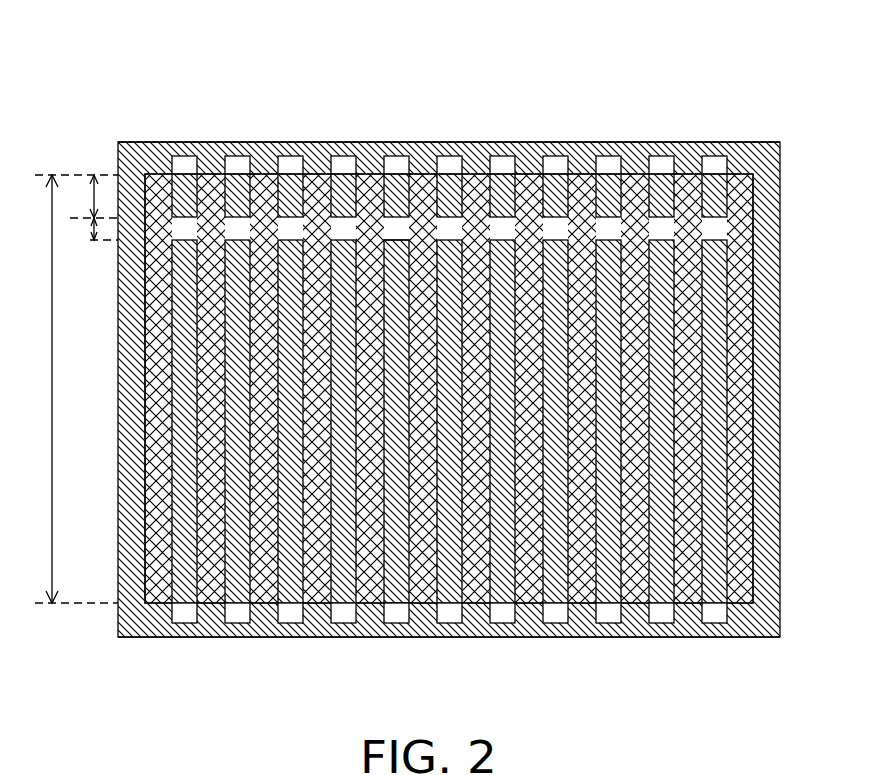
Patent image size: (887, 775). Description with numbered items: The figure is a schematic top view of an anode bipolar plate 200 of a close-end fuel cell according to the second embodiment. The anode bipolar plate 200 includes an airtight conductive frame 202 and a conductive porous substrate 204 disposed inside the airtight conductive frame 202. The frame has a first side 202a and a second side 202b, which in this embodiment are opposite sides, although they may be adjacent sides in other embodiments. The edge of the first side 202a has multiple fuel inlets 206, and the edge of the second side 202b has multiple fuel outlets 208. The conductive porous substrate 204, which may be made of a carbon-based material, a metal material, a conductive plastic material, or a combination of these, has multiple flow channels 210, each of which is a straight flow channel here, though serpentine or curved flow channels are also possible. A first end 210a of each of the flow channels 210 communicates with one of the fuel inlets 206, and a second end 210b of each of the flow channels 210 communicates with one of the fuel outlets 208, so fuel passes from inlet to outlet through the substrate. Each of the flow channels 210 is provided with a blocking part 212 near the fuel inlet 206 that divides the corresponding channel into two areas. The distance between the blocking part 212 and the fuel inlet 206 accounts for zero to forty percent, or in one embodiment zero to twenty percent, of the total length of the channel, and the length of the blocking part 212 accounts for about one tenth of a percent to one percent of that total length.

The anode bipolar plate 200 is at (112, 63).
The airtight conductive frame 202 is at (772, 165).
The first side 202a is at (628, 142).
The second side 202b is at (485, 638).
The conductive porous substrate 204 is at (735, 230).
The fuel inlets 206 is at (340, 163).
The fuel outlets 208 is at (290, 613).
The flow channels 210 is at (713, 343).
The first end 210a is at (397, 165).
The second end 210b is at (388, 607).
The blocking part 212 is at (185, 227).